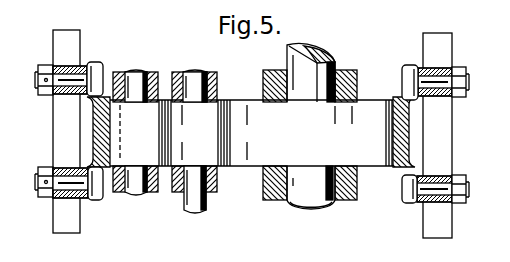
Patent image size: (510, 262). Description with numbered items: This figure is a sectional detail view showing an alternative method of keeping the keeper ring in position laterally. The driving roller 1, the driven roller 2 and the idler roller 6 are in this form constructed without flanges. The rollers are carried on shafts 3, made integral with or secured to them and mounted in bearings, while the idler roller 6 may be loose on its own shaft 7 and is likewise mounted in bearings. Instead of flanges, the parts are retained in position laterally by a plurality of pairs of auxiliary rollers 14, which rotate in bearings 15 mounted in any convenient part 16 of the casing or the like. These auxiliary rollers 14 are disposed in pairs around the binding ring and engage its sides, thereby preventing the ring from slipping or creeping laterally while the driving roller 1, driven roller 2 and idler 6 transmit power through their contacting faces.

The driving roller 1 is at (193, 128).
The driven roller 2 is at (360, 123).
The shafts 3 is at (205, 192).
The idler roller 6 is at (133, 110).
The shaft 7 is at (132, 190).
The auxiliary rollers 14 is at (95, 70).
The bearings 15 is at (63, 62).
The part of the casing 16 is at (67, 126).